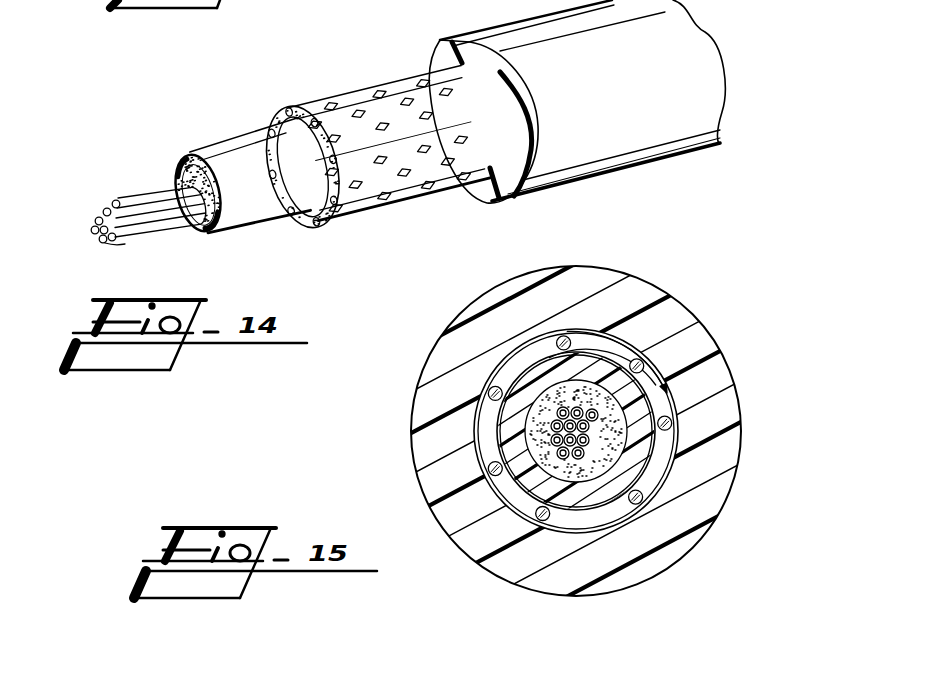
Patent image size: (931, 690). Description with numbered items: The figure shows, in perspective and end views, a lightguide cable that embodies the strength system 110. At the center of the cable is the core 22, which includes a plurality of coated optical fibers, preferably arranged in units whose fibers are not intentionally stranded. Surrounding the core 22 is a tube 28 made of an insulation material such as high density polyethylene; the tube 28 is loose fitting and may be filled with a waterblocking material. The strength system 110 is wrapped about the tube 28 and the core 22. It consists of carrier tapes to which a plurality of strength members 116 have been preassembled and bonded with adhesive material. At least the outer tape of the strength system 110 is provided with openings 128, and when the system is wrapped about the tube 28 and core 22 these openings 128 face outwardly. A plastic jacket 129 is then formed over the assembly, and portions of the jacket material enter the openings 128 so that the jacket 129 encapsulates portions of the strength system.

In FIG. 14, the core 22 is at (130, 190).
In FIG. 15, the core 22 is at (546, 453).
In FIG. 14, the tube 28 is at (214, 156).
In FIG. 15, the tube 28 is at (571, 498).
In FIG. 14, the strength system 110 is at (352, 88).
In FIG. 14, the strength members 116 is at (313, 210).
In FIG. 15, the strength members 116 is at (484, 468).
In FIG. 14, the openings 128 is at (395, 202).
In FIG. 14, the jacket 129 is at (487, 193).
In FIG. 15, the jacket 129 is at (627, 293).